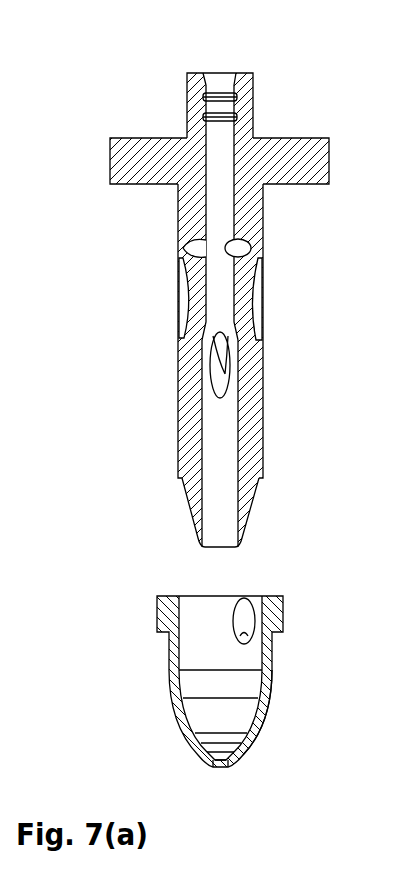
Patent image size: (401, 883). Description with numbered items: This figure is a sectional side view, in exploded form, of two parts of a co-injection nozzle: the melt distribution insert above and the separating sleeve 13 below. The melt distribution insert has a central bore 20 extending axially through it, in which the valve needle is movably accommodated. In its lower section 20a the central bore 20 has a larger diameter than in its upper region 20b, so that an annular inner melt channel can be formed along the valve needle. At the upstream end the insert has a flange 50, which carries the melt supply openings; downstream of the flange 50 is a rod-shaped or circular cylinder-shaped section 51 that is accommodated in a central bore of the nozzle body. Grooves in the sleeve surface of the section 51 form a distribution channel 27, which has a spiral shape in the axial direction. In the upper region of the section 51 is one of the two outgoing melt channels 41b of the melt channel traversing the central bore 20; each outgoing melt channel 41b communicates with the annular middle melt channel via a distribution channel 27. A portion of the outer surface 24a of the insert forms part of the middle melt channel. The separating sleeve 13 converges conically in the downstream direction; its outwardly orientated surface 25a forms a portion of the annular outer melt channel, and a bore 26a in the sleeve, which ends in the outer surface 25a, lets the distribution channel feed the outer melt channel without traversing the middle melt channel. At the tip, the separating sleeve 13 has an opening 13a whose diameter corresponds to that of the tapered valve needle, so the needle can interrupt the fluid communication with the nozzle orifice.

The central bore 20 is at (220, 85).
The upstream flange 50 is at (136, 165).
The upper region of the central bore 20b is at (218, 208).
The outgoing melt channel 41b is at (236, 248).
The distribution channel 27 is at (258, 308).
The lower section of the central bore 20a is at (208, 450).
The outer surface of the melt distribution insert 24a is at (190, 520).
The rod-shaped section 51 is at (257, 412).
The separating sleeve 13 is at (108, 748).
The outer surface of the separating sleeve 25a is at (260, 725).
The bore in the separating sleeve 26a is at (243, 617).
The opening 13a is at (222, 766).